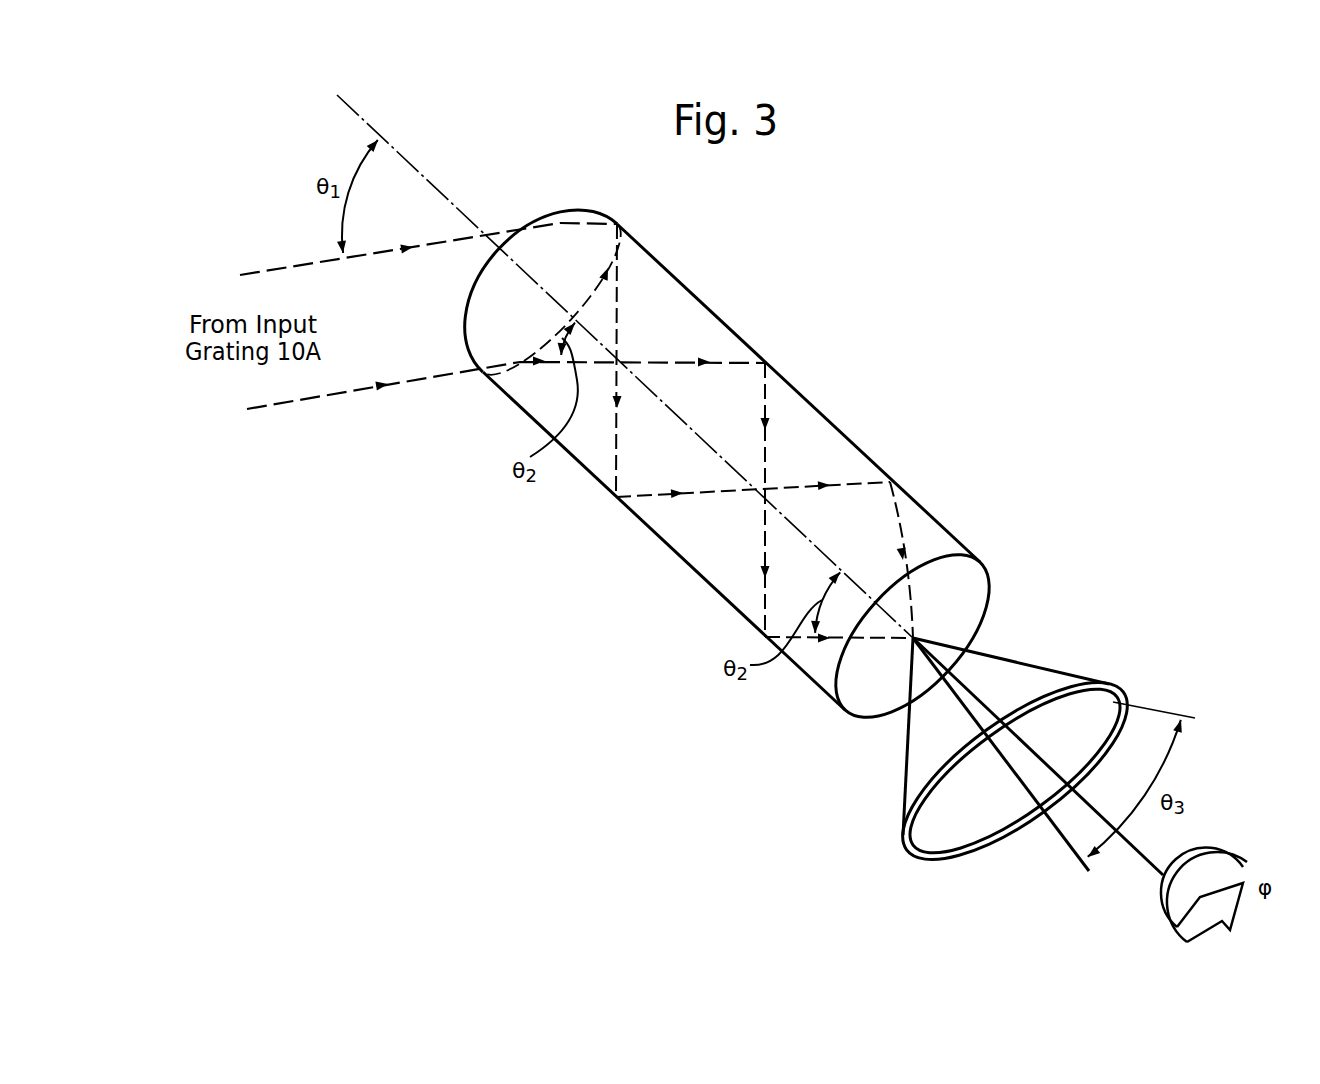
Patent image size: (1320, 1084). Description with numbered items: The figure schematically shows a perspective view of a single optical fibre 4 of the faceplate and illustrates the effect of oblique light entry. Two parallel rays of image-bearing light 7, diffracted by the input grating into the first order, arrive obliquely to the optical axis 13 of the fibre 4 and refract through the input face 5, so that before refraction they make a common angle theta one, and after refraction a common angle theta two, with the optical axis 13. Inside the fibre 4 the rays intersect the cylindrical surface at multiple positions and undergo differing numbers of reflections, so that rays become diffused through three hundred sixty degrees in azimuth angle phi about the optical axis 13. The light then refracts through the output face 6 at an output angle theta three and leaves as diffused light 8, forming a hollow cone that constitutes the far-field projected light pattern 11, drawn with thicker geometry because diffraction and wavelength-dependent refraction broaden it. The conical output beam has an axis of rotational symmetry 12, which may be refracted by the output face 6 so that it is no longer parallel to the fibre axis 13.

The optical fibre 4 is at (822, 418).
The input face 5 is at (582, 212).
The output face 6 is at (1007, 600).
The image-bearing light 7 is at (258, 273).
The diffused light 8 is at (1102, 618).
The projected light pattern 11 is at (906, 851).
The axis of rotational symmetry 12 is at (1065, 833).
The optical axis 13 is at (415, 170).